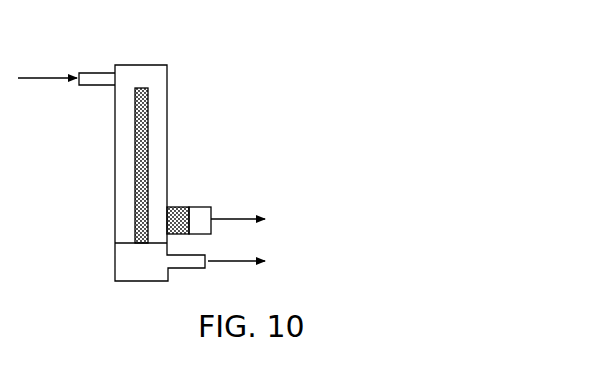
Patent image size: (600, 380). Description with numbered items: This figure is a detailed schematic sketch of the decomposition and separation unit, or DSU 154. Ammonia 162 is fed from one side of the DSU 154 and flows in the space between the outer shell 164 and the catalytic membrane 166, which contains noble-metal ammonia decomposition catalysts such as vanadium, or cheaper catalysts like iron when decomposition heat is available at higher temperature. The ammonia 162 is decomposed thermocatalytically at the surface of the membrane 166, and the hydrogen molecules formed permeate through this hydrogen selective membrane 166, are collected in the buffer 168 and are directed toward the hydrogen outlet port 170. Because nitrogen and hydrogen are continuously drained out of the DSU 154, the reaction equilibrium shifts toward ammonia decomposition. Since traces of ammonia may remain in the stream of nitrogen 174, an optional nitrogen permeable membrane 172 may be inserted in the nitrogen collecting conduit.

The decomposition and separation unit 154 is at (232, 174).
The ammonia 162 is at (61, 79).
The outer shell 164 is at (112, 197).
The catalytic membrane 166 is at (151, 161).
The buffer 168 is at (139, 270).
The hydrogen outlet port 170 is at (333, 257).
The nitrogen permeable membrane 172 is at (187, 208).
The nitrogen stream 174 is at (314, 216).